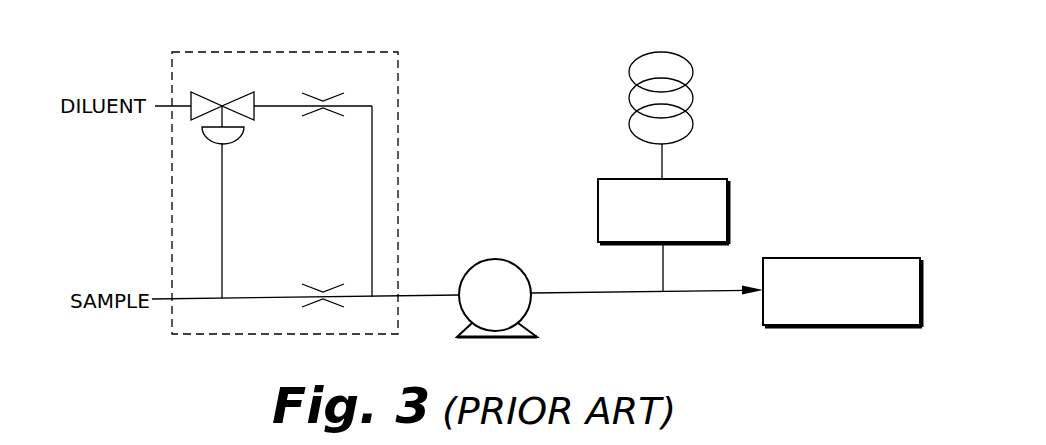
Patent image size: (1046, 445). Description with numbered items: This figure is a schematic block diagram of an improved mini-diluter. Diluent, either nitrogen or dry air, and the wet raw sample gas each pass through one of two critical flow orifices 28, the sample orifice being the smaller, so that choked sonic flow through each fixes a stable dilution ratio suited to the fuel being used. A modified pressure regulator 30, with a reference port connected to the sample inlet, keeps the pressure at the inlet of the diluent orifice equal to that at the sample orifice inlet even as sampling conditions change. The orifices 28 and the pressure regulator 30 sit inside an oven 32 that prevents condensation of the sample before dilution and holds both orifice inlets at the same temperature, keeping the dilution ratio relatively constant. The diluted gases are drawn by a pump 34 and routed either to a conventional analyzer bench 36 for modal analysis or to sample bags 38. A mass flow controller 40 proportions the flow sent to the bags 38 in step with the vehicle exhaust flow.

The critical flow orifices 28 is at (323, 117).
The pressure regulator 30 is at (252, 130).
The oven 32 is at (398, 92).
The pump 34 is at (493, 257).
The analyzer bench 36 is at (846, 257).
The sample bags 38 is at (730, 105).
The mass flow controller 40 is at (730, 207).